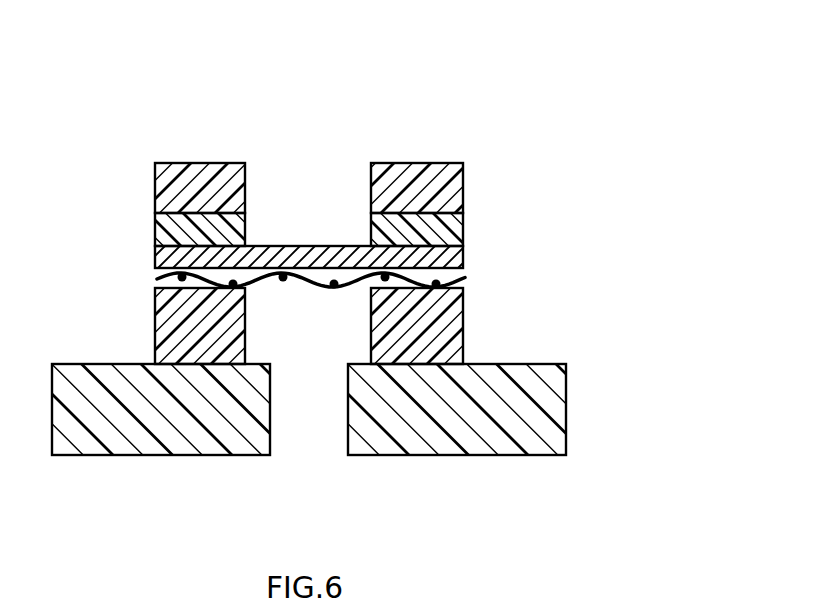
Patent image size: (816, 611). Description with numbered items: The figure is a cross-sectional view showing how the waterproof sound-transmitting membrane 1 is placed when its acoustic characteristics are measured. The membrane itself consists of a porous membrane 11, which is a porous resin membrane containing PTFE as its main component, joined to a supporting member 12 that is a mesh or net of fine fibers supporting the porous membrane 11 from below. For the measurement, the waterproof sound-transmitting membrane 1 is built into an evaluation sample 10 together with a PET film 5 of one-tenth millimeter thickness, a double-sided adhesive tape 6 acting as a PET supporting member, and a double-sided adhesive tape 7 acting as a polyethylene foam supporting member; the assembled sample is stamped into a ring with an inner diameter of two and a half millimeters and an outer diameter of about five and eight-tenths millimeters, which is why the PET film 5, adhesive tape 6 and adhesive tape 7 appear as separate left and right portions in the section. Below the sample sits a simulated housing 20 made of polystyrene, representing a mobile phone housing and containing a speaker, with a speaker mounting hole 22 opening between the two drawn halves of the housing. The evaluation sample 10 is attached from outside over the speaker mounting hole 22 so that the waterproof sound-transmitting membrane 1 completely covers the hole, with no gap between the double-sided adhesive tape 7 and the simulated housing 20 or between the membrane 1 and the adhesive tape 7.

The evaluation sample 10 is at (461, 117).
The PET film 5 is at (452, 187).
The double-sided adhesive tape 6 is at (452, 228).
The porous membrane 11 is at (460, 260).
The supporting member 12 is at (464, 282).
The waterproof sound-transmitting membrane 1 is at (553, 237).
The double-sided adhesive tape 7 is at (440, 332).
The simulated housing 20 is at (548, 408).
The speaker mounting hole 22 is at (311, 420).